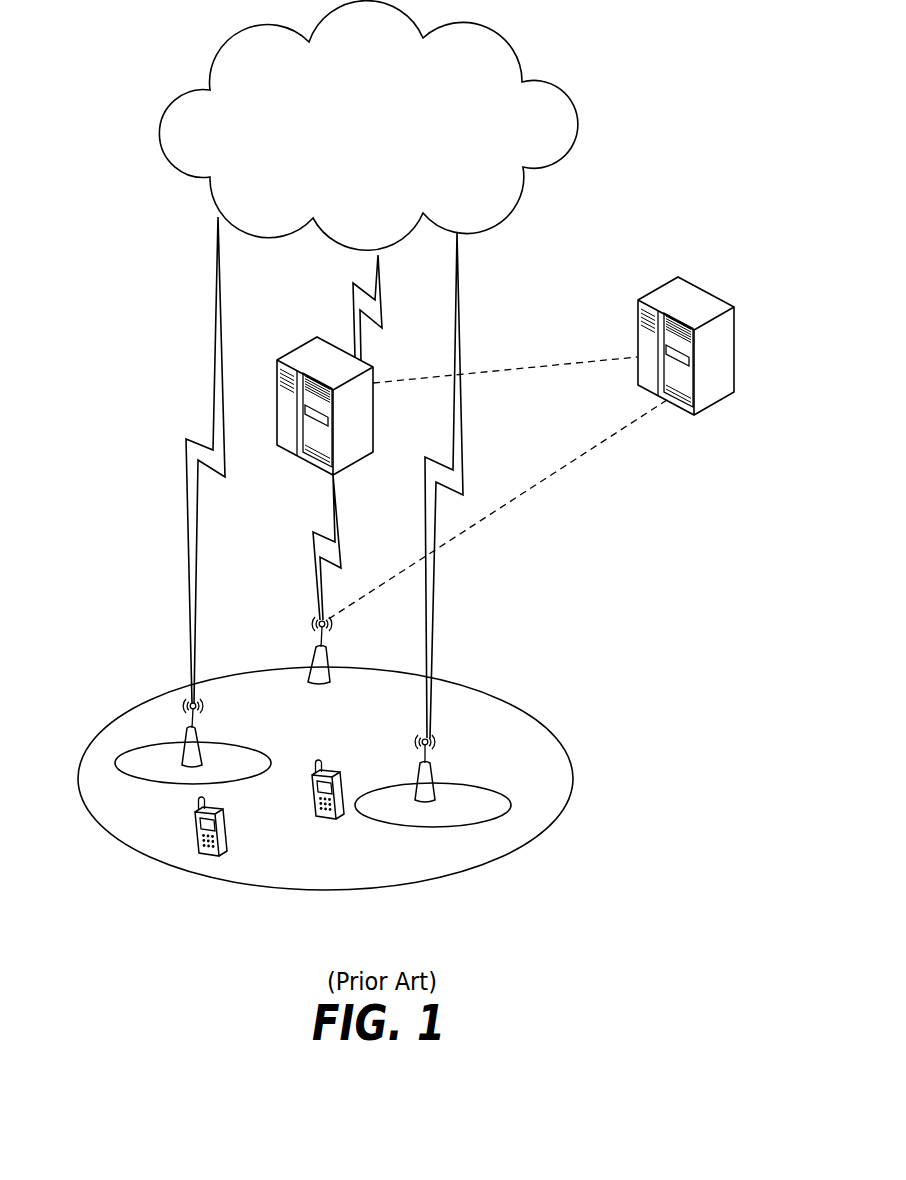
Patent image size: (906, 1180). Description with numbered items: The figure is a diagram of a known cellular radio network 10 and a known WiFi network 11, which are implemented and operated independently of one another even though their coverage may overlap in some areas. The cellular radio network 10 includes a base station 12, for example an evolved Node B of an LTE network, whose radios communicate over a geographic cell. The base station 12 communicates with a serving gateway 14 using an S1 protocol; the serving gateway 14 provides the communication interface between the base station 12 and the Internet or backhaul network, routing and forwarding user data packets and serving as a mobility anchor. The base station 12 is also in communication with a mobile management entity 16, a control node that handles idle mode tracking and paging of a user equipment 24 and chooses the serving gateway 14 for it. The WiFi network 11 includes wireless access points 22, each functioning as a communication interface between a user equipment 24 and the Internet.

The cellular radio network 10 is at (112, 358).
The WiFi network 11 is at (616, 255).
The base station 12 is at (309, 640).
The serving gateway 14 is at (373, 417).
The mobile management entity 16 is at (735, 357).
The wireless access point 22 is at (196, 718).
The user equipment 24 is at (226, 823).